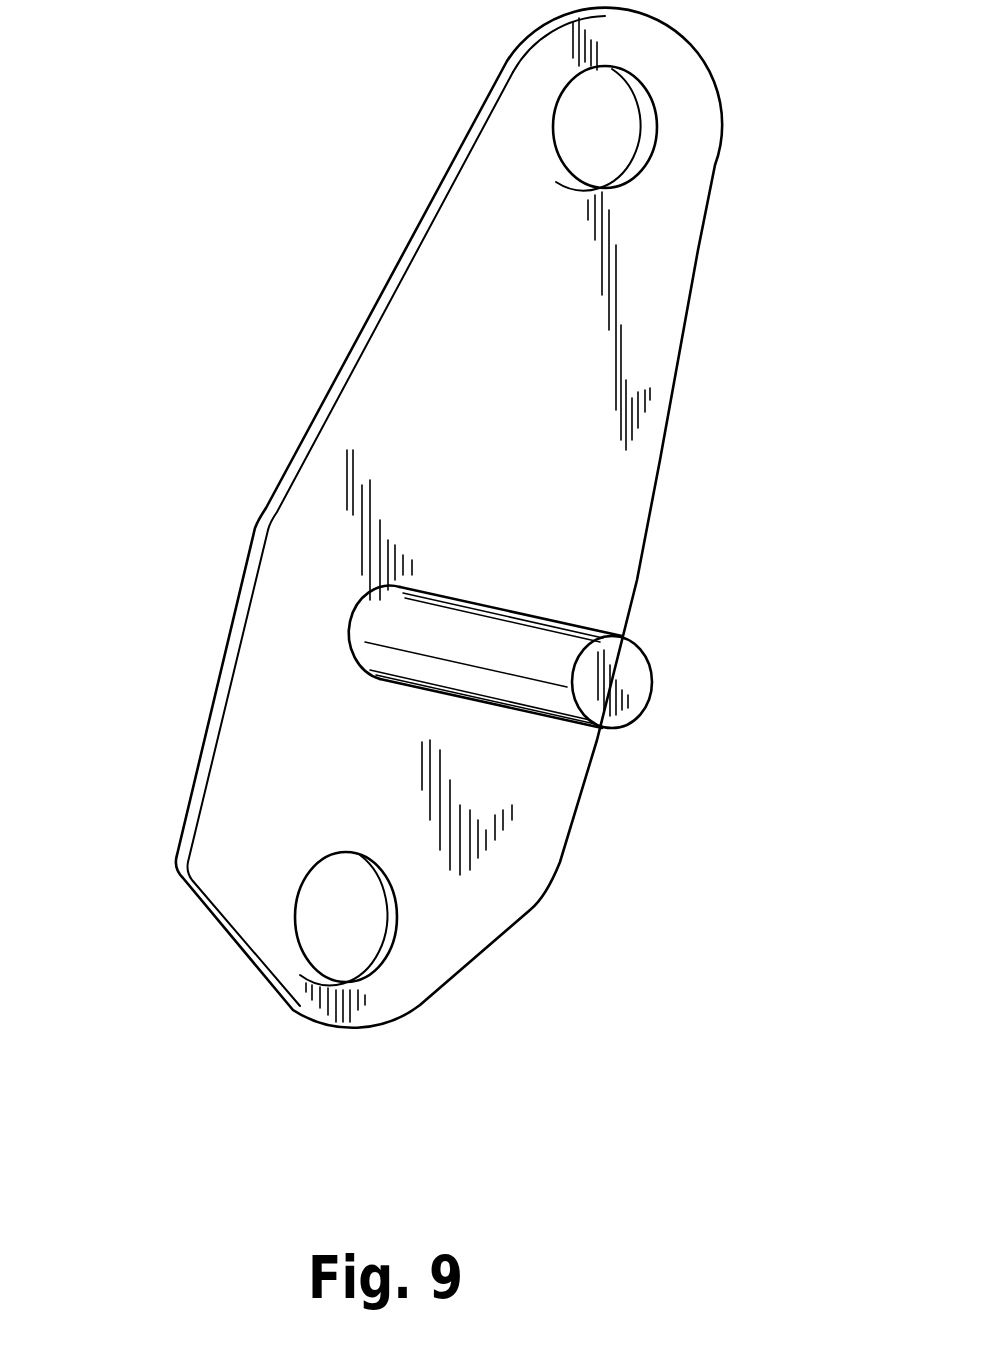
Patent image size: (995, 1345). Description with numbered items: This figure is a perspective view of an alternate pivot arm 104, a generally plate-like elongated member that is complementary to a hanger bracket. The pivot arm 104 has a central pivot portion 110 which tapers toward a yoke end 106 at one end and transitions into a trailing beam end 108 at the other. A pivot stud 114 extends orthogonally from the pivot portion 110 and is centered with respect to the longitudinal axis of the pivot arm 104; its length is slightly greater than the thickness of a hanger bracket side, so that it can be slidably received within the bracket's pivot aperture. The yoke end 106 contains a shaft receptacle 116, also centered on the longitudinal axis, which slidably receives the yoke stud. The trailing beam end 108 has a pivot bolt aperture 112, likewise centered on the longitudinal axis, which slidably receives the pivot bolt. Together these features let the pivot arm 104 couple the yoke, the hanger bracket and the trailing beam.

The pivot arm 104 is at (615, 467).
The yoke end 106 is at (683, 162).
The trailing beam end 108 is at (212, 913).
The pivot portion 110 is at (238, 598).
The pivot bolt aperture 112 is at (397, 953).
The pivot stud 114 is at (638, 660).
The shaft receptacle 116 is at (657, 108).